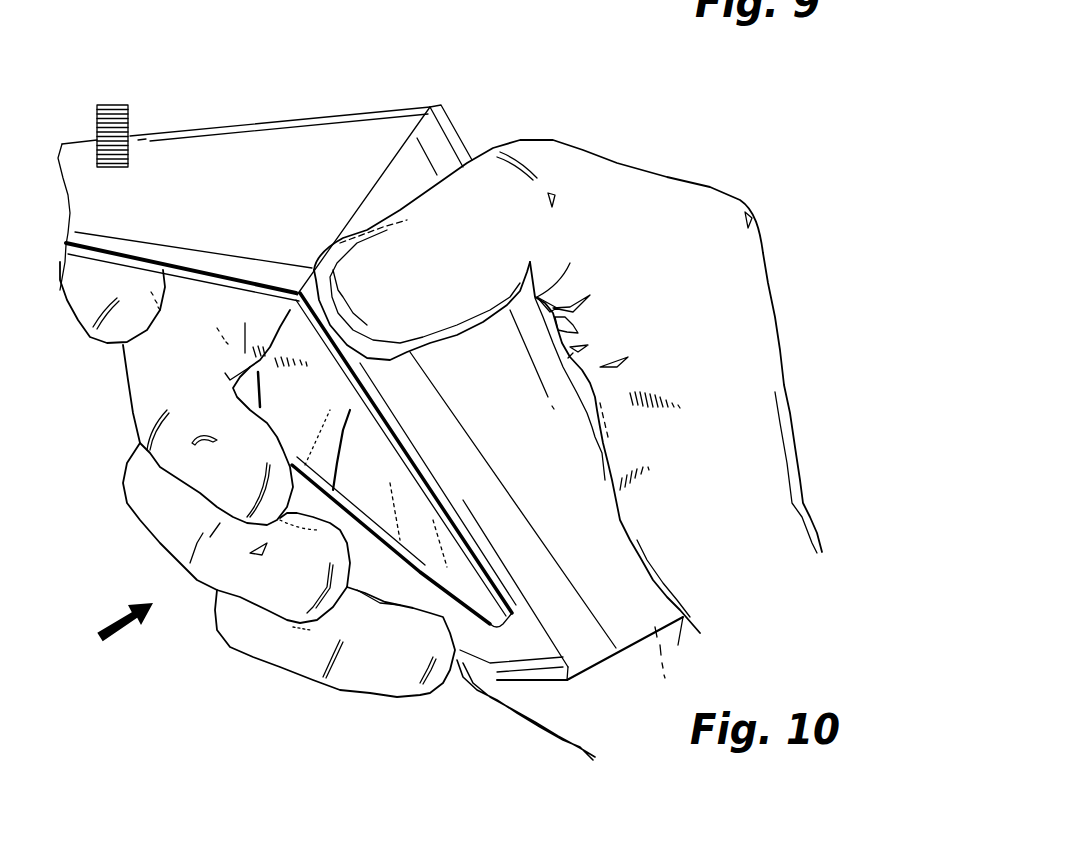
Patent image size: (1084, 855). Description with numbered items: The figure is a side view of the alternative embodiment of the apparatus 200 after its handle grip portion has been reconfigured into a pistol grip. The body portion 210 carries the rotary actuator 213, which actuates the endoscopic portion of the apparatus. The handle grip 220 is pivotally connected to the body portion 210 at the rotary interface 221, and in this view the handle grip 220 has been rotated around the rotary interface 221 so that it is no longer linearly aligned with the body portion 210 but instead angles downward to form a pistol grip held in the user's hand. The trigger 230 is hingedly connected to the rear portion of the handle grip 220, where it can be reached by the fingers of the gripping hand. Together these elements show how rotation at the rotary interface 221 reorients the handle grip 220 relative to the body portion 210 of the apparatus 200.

The apparatus 200 is at (309, 83).
The body portion 210 is at (262, 213).
The rotary actuator 213 is at (108, 107).
The handle grip 220 is at (508, 405).
The rotary interface 221 is at (432, 105).
The trigger 230 is at (437, 600).